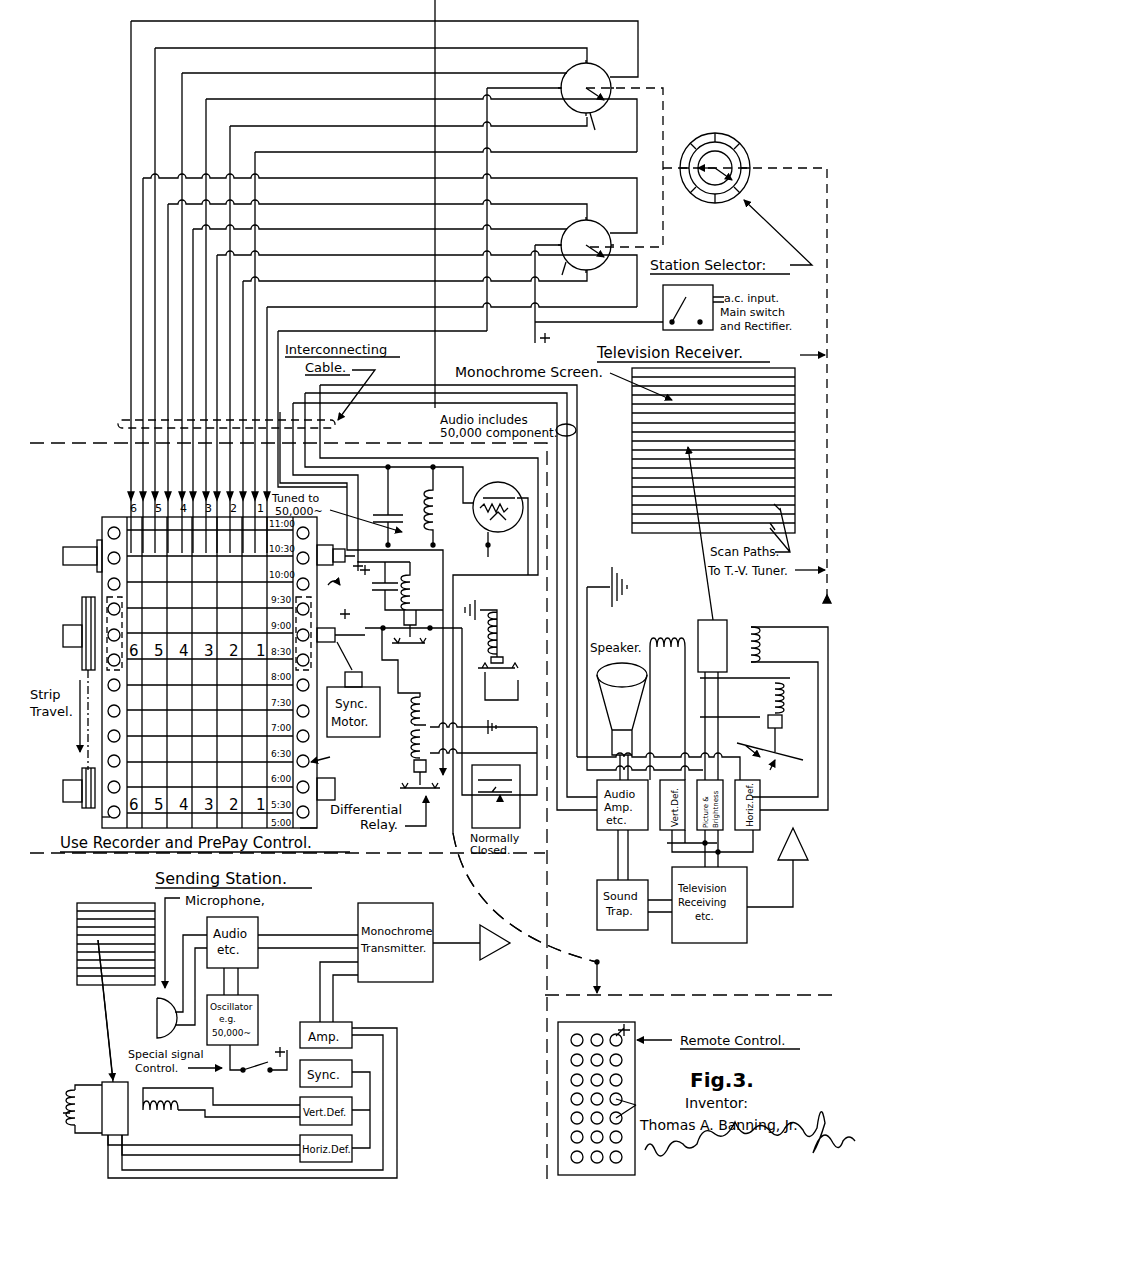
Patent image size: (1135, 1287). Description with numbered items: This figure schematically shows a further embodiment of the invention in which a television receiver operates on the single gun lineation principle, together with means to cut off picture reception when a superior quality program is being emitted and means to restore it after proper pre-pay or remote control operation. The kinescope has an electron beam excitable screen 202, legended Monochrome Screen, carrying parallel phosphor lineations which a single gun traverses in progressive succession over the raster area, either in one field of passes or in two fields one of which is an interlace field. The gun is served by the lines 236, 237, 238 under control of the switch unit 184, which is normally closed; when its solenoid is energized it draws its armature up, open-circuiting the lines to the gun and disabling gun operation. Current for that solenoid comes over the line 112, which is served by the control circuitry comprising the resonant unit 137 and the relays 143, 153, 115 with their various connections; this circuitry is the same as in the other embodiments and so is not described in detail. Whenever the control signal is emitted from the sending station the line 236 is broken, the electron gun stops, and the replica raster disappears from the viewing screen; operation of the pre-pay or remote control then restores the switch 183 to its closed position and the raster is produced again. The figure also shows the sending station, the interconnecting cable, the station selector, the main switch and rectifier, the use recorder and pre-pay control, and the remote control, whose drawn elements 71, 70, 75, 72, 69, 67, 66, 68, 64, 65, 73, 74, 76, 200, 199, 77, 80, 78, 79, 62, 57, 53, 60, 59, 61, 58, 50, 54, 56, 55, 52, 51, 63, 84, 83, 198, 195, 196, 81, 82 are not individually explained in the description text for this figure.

The recorder row wires 71 is at (395, 22).
The recorder column wires 70 is at (392, 180).
The common conductor 75 is at (490, 171).
The conductor to main switch 72 is at (533, 270).
The upper station selector switch 69 is at (570, 100).
The switch arm 67 is at (590, 115).
The lower selector switch arm 66 is at (596, 270).
The lower station selector switch 68 is at (565, 264).
The station selector dial 64 is at (738, 137).
The station selector knob 65 is at (670, 168).
The main switch 73 is at (668, 300).
The rectifier 74 is at (712, 302).
The receiver conductor 76 is at (803, 352).
The screen 202 is at (650, 432).
The photocell coil 200 is at (665, 640).
The relay coil 199 is at (765, 630).
The line 236 is at (712, 692).
The line 237 is at (706, 711).
The switch unit 184 is at (783, 718).
The line 238 is at (800, 757).
The switch 183 is at (769, 770).
The line 112 is at (578, 570).
The resonant unit 137 is at (400, 485).
The relay 143 is at (416, 590).
The relay 115 is at (500, 608).
The relay 153 is at (405, 758).
The normally closed switch 77 is at (498, 765).
The switch contact 80 is at (494, 773).
The switch contact 78 is at (503, 790).
The switch blade 79 is at (502, 800).
The recorder strip frame 62 is at (128, 512).
The upper roller 57 is at (97, 548).
The contact brushes 53 is at (107, 597).
The drive roller 60 is at (82, 615).
The lower roller 59 is at (82, 772).
The roller shaft 61 is at (82, 800).
The frame base 58 is at (115, 818).
The recorder switch 50 is at (335, 548).
The contact 54 is at (345, 621).
The motor lead 56 is at (346, 660).
The motor terminal 55 is at (345, 682).
The sprocket hole contact 52 is at (330, 755).
The contact 51 is at (335, 788).
The recorder base 63 is at (317, 826).
The remote control cable 84 is at (487, 888).
The remote control conductor 83 is at (596, 980).
The sending station scanner 198 is at (97, 930).
The relay coil 195 is at (63, 1110).
The deflection coil 196 is at (165, 1118).
The remote control unit 81 is at (638, 1072).
The remote control buttons 82 is at (636, 1105).